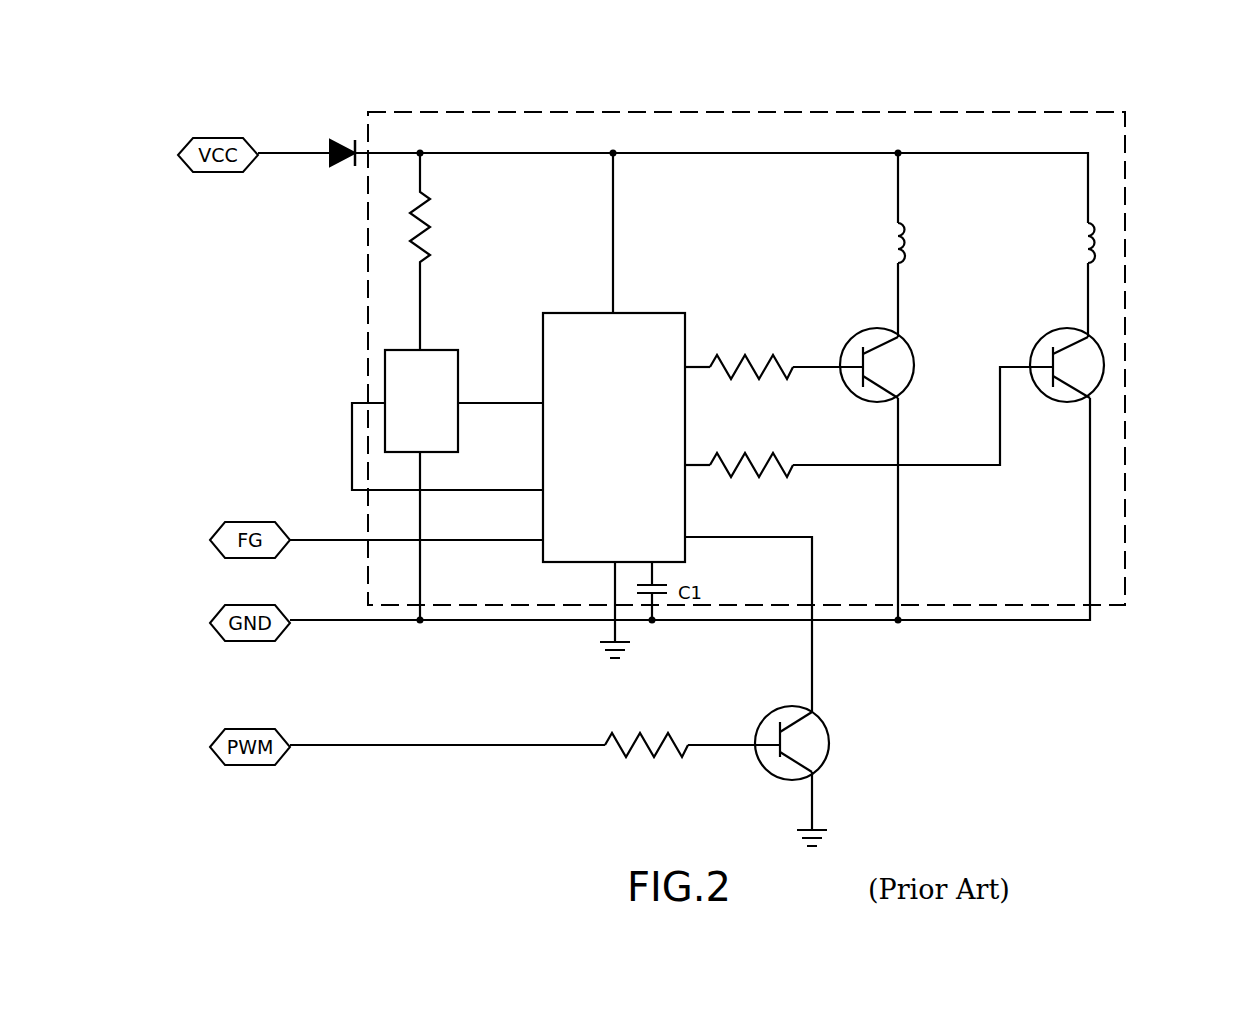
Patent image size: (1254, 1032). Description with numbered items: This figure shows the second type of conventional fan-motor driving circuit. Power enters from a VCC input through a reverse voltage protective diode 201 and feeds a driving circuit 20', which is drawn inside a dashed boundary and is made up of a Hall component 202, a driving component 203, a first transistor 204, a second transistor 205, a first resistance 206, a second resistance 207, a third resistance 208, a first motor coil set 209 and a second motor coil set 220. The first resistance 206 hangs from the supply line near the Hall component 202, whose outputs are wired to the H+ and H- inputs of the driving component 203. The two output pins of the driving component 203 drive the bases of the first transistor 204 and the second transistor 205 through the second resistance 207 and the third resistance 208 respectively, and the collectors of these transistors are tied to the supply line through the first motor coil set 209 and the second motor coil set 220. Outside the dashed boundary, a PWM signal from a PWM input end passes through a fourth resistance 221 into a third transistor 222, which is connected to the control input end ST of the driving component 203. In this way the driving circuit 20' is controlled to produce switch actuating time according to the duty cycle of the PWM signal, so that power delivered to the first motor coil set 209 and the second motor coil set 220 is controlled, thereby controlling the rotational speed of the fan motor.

The driving circuit 20' is at (774, 323).
The reverse voltage protective diode 201 is at (346, 134).
The Hall component 202 is at (393, 375).
The driving component 203 is at (572, 330).
The first transistor 204 is at (897, 377).
The second transistor 205 is at (1086, 380).
The first resistance 206 is at (422, 218).
The second resistance 207 is at (752, 367).
The third resistance 208 is at (765, 465).
The first motor coil set 209 is at (903, 243).
The second motor coil set 220 is at (1095, 243).
The fourth resistance 221 is at (660, 743).
The third transistor 222 is at (807, 735).